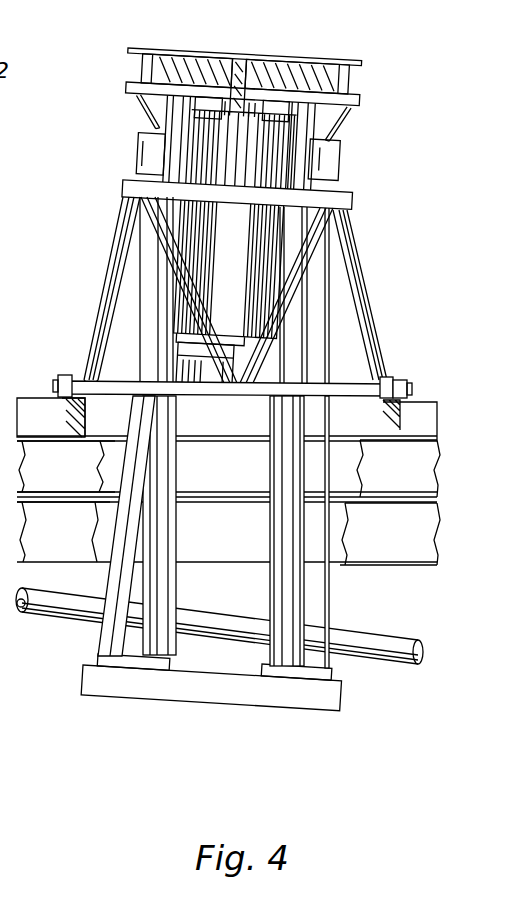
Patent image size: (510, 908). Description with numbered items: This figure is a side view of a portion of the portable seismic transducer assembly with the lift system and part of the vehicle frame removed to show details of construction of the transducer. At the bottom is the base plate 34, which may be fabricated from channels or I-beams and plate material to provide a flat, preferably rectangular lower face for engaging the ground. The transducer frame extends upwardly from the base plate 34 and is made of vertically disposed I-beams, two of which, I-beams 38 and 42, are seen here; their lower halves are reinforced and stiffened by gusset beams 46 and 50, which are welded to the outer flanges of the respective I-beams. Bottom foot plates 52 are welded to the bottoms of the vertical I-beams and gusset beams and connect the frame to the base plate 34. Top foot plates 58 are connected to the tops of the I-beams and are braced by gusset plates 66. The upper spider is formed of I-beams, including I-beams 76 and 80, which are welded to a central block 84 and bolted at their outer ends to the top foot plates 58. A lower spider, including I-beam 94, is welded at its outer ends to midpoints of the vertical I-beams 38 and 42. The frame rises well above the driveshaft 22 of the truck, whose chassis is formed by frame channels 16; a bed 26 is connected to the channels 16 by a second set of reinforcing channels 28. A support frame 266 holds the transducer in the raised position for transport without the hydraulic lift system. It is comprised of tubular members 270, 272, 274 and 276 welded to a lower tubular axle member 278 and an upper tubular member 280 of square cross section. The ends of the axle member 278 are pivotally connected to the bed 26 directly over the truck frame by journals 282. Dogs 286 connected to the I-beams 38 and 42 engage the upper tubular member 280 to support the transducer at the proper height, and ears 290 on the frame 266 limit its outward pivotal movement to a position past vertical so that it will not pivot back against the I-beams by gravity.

The frame channels 16 is at (381, 542).
The driveshaft 22 is at (365, 632).
The bed 26 is at (36, 400).
The reinforcing channels 28 is at (386, 477).
The base plate 34 is at (215, 692).
The vertical I-beam 38 is at (326, 328).
The vertical I-beam 42 is at (139, 353).
The gusset beam 46 is at (324, 585).
The gusset beam 50 is at (113, 578).
The bottom foot plates 52 is at (98, 662).
The top foot plates 58 is at (128, 91).
The gusset plates 66 is at (147, 100).
The I-beam of upper spider 76 is at (313, 63).
The I-beam of upper spider 80 is at (178, 58).
The central block 84 is at (246, 60).
The I-beam of lower spider 94 is at (196, 378).
The support frame 266 is at (245, 279).
The tubular member 270 is at (115, 256).
The tubular member 272 is at (160, 232).
The tubular member 274 is at (315, 232).
The tubular member 276 is at (358, 265).
The lower tubular axle member 278 is at (335, 385).
The upper tubular member 280 is at (353, 194).
The journals 282 is at (67, 374).
The dogs 286 is at (142, 150).
The ears 290 is at (386, 377).